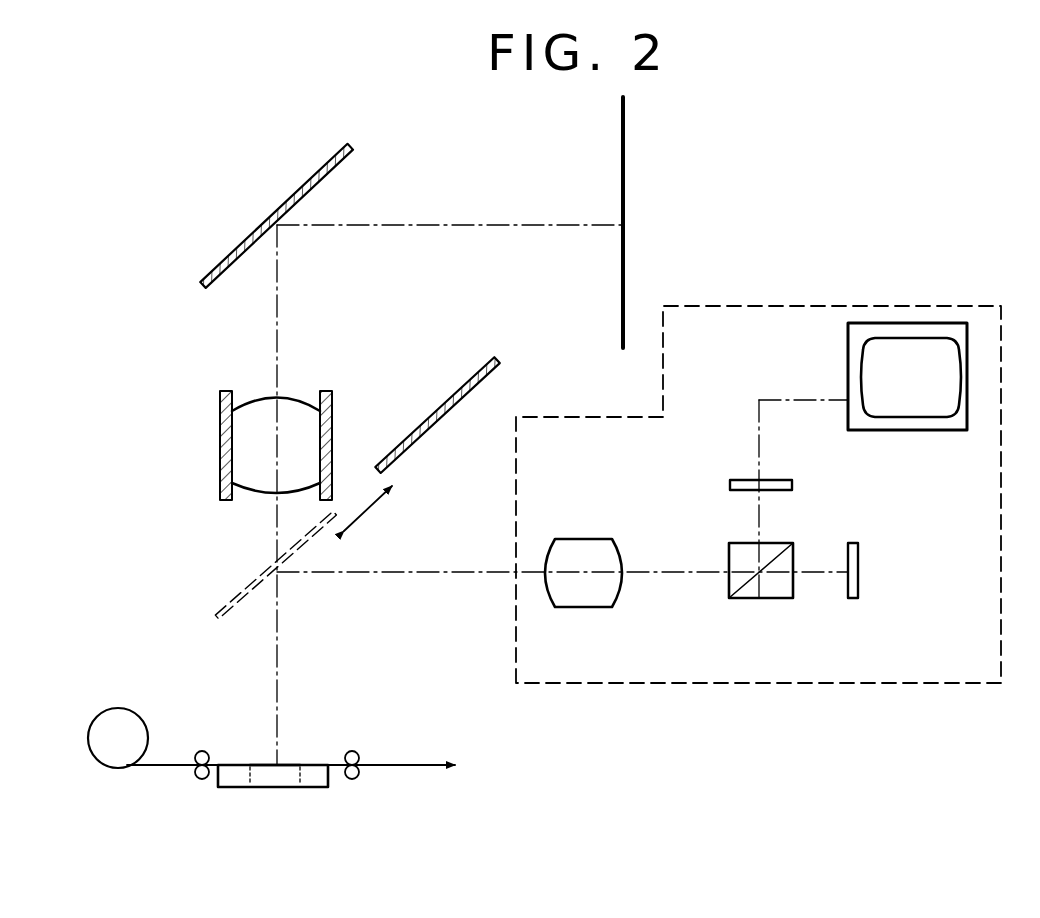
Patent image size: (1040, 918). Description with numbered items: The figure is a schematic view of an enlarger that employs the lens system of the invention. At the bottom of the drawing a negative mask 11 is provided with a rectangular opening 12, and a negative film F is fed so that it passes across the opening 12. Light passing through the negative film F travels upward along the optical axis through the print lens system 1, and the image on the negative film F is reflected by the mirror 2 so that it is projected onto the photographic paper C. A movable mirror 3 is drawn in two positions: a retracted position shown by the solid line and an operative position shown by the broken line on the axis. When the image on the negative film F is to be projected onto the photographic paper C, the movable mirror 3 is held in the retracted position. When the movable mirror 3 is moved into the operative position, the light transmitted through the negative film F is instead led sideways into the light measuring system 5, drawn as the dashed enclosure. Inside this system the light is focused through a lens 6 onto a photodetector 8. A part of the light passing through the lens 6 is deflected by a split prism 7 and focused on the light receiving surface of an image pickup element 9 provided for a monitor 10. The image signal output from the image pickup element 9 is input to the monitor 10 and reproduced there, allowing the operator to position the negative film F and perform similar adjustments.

The print lens system 1 is at (297, 397).
The mirror 2 is at (314, 181).
The movable mirror 3 is at (451, 399).
The light measuring system 5 is at (631, 690).
The lens 6 is at (620, 597).
The split prism 7 is at (758, 600).
The photodetector 8 is at (858, 598).
The image pickup element 9 is at (728, 479).
The monitor 10 is at (930, 432).
The negative mask 11 is at (323, 763).
The rectangular opening 12 is at (290, 778).
The photographic paper C is at (625, 158).
The negative film F is at (392, 762).